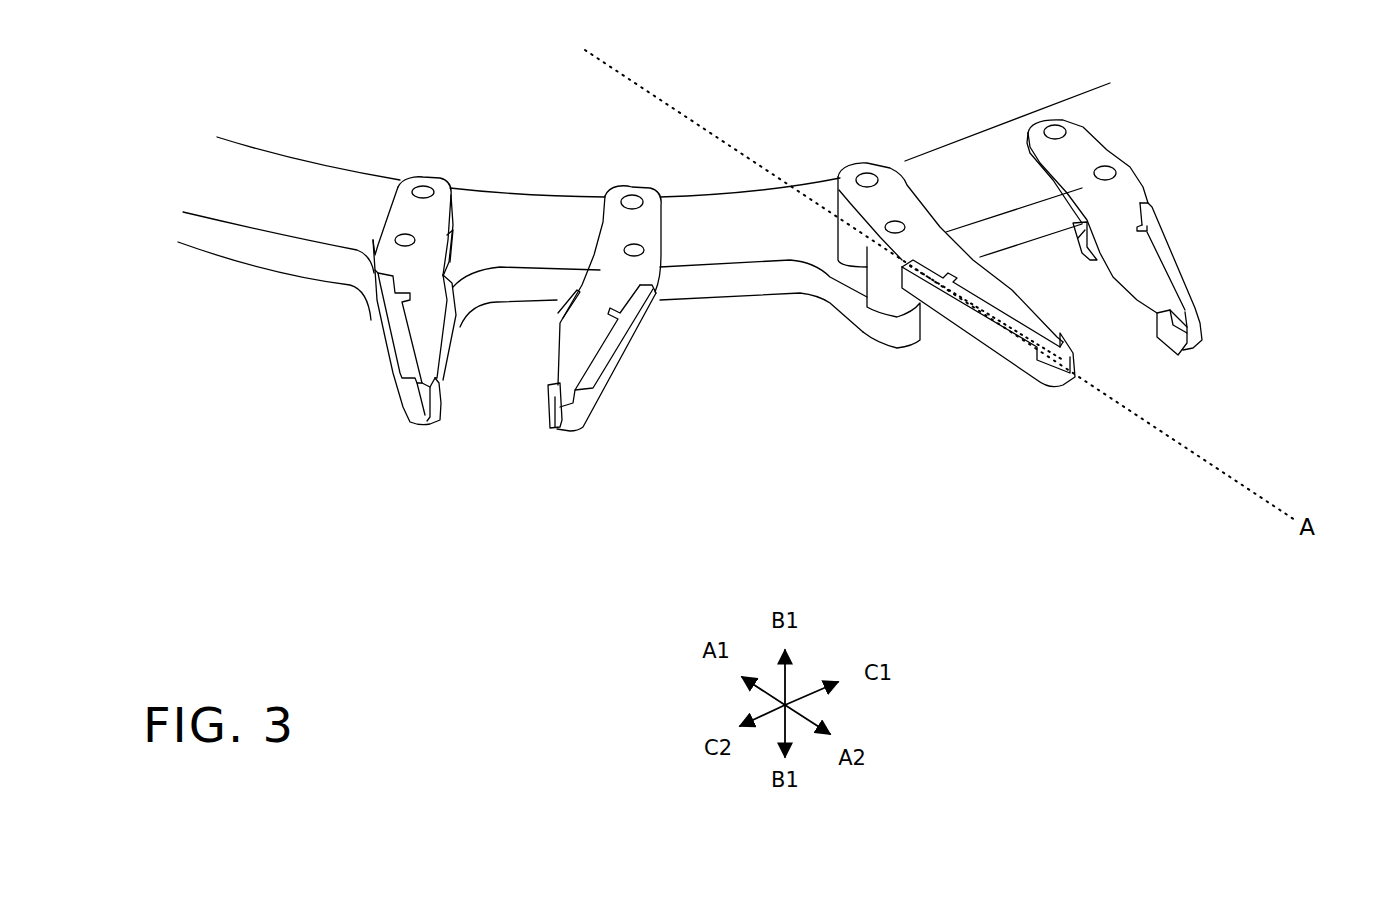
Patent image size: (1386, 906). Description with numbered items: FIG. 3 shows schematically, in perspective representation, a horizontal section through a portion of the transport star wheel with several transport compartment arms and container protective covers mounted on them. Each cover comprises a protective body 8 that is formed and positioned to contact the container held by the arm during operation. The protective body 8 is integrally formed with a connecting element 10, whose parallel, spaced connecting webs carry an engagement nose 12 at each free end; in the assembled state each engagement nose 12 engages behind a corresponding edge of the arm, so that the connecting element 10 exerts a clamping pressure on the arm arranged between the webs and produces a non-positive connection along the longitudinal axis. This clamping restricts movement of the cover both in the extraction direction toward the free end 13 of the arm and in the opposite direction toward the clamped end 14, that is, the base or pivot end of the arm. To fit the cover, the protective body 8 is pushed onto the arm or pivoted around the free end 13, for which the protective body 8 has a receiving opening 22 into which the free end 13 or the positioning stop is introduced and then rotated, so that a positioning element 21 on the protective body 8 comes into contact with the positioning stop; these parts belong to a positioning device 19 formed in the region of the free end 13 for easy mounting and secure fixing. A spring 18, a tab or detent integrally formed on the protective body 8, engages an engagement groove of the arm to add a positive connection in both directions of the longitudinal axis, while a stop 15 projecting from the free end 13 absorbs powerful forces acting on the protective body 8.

The protective body 8 is at (400, 343).
The connecting element 10 is at (472, 347).
The engagement nose 12 is at (449, 297).
The free end 13 is at (365, 482).
The clamped end 14 is at (313, 264).
The stop 15 is at (802, 229).
The spring 18 is at (1148, 229).
The positioning device 19 is at (1255, 366).
The positioning element 21 is at (555, 403).
The receiving opening 22 is at (650, 408).